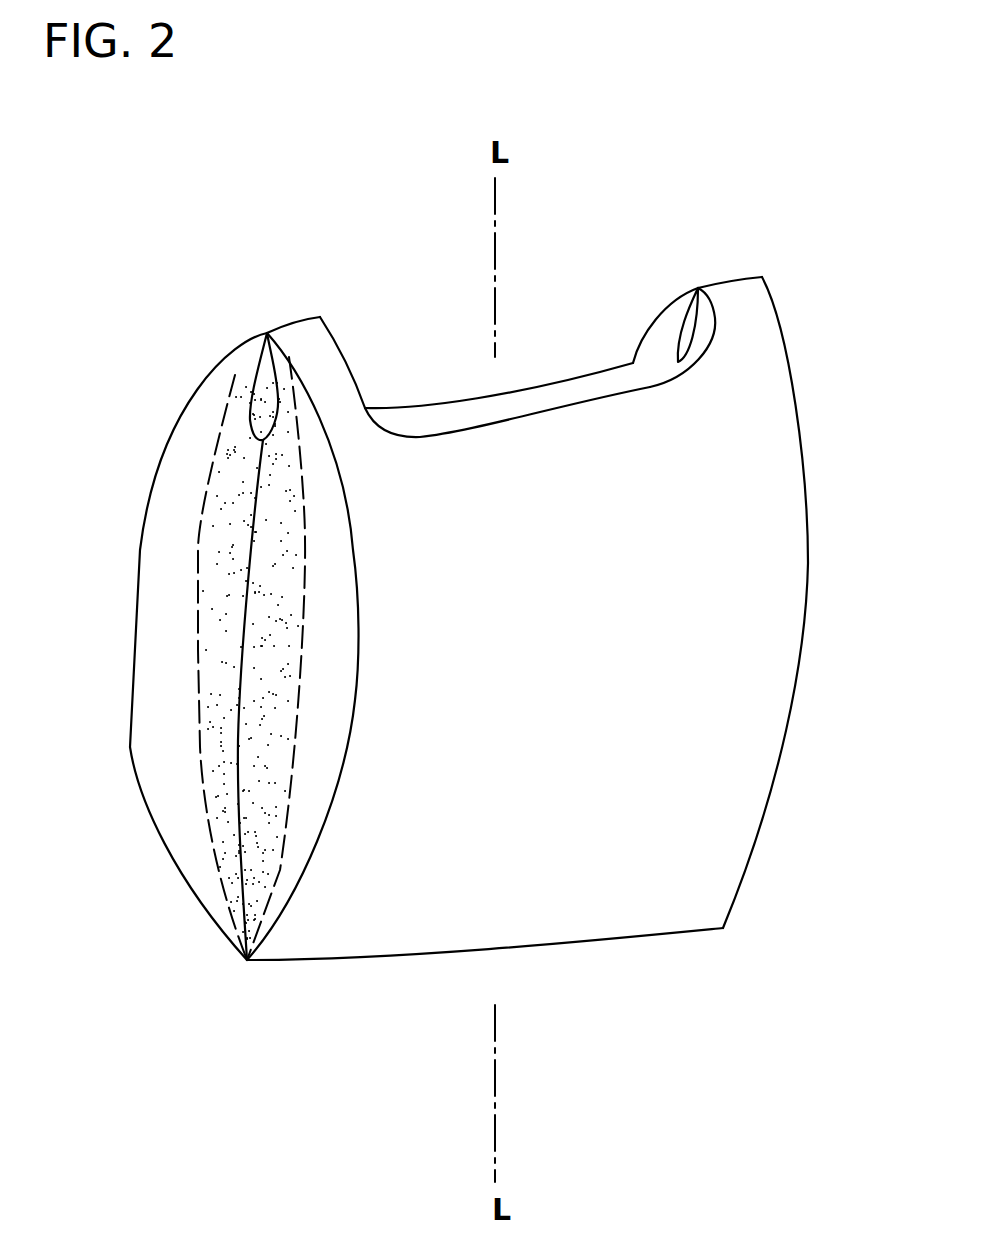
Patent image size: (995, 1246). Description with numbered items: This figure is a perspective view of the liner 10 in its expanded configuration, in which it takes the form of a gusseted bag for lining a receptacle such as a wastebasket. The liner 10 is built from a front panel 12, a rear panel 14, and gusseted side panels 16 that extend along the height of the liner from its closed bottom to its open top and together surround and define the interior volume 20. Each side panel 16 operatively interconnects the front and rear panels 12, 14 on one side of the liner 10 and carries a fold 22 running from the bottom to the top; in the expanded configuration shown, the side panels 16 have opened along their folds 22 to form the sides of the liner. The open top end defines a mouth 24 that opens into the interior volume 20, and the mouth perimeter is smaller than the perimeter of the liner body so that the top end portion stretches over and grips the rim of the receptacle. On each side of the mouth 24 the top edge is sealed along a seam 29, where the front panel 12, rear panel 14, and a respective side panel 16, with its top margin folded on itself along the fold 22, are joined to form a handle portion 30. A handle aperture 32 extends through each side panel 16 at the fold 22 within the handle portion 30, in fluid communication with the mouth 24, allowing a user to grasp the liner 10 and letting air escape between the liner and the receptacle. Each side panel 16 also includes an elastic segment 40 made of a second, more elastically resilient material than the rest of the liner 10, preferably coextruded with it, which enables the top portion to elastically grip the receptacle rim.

The liner 10 is at (321, 1050).
The front panel 12 is at (632, 852).
The rear panel 14 is at (437, 420).
The side panel 16 is at (168, 580).
The interior volume 20 is at (535, 405).
The fold 22 is at (257, 507).
The mouth 24 is at (582, 344).
The seam 29 is at (295, 322).
The handle portion 30 is at (308, 348).
The handle aperture 32 is at (257, 410).
The elastic segment 40 is at (223, 832).